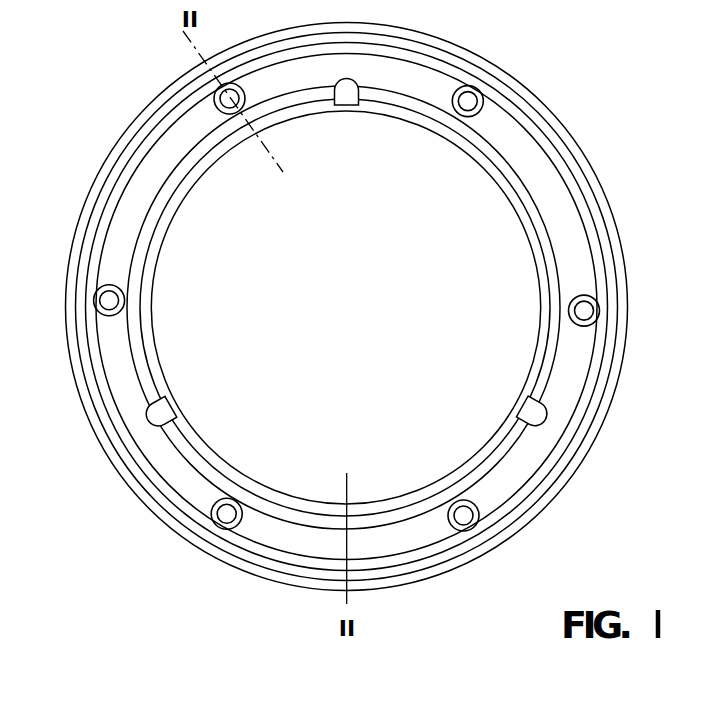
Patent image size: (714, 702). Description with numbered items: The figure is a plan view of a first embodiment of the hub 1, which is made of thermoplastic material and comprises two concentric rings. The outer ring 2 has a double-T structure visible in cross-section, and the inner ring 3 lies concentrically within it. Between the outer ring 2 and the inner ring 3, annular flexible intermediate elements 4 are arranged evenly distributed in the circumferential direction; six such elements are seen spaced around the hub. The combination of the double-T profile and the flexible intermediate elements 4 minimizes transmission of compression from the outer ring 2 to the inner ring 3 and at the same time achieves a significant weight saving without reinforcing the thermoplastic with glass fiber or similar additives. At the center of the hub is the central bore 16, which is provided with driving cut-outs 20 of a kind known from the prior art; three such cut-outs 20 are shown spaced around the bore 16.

The lock ring 1 is at (398, 587).
The outer ring 2 is at (531, 112).
The inner ring 3 is at (518, 202).
The annular flexible intermediate elements 4 is at (484, 96).
The central bore 16 is at (225, 220).
The driving cut-outs 20 is at (347, 92).